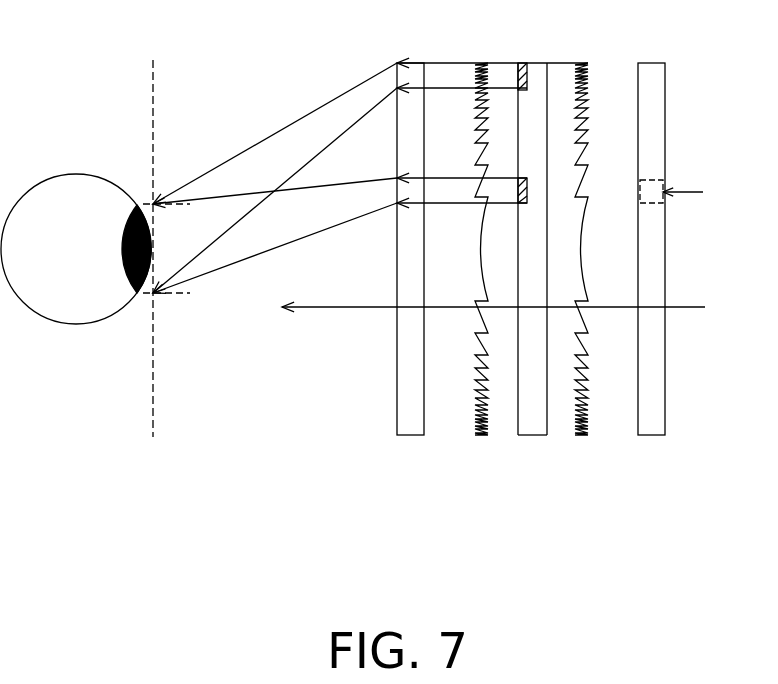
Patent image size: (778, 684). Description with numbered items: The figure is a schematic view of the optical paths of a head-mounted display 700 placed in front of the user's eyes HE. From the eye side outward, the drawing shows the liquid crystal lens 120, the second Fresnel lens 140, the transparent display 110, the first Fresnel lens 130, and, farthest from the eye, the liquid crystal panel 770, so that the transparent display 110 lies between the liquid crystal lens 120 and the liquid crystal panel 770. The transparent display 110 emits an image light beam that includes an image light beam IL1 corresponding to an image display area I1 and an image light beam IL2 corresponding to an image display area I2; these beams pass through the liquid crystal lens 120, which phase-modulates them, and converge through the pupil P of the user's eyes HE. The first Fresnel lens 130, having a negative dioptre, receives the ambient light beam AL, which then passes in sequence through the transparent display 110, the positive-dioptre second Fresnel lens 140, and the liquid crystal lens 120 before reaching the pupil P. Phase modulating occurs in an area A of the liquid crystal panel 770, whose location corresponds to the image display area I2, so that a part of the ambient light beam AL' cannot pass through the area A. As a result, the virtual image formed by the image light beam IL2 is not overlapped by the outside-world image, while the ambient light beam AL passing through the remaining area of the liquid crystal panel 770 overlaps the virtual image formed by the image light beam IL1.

The head-mounted display 700 is at (653, 523).
The transparent display 110 is at (532, 70).
The liquid crystal lens 120 is at (410, 405).
The first Fresnel lens 130 is at (566, 70).
The second Fresnel lens 140 is at (502, 405).
The liquid crystal panel 770 is at (653, 405).
The user's eyes HE is at (58, 308).
The pupil P is at (153, 390).
The image light beam IL1 is at (287, 180).
The image light beam IL2 is at (347, 222).
The image display area I1 is at (527, 78).
The image display area I2 is at (527, 190).
The area A is at (645, 180).
The ambient light beam AL is at (512, 308).
The ambient light beam AL' is at (704, 191).